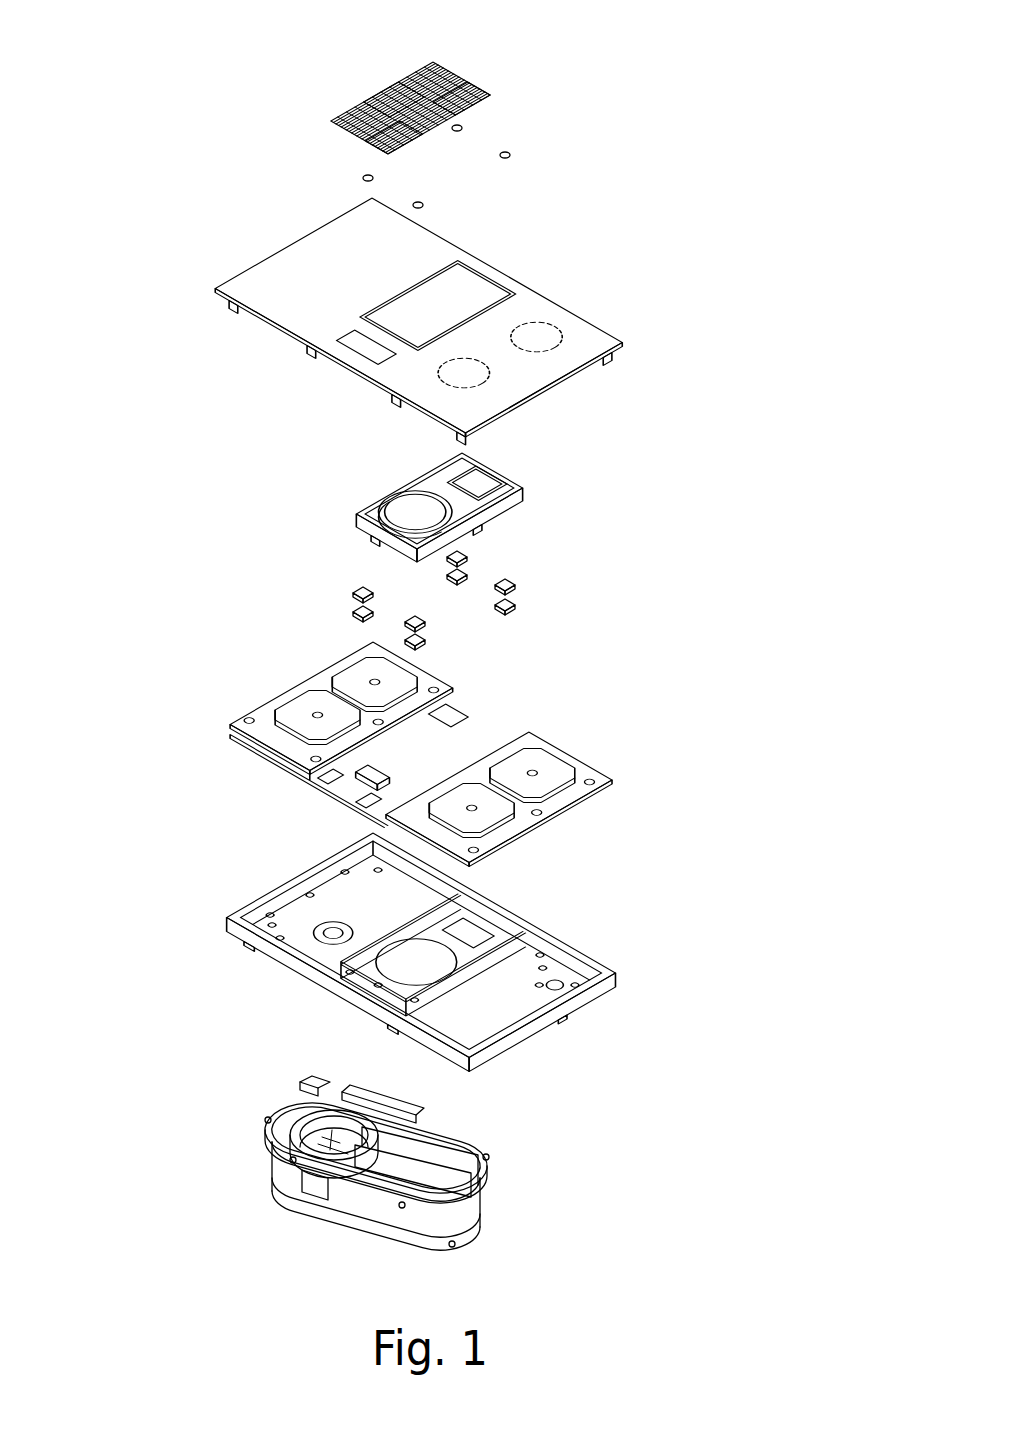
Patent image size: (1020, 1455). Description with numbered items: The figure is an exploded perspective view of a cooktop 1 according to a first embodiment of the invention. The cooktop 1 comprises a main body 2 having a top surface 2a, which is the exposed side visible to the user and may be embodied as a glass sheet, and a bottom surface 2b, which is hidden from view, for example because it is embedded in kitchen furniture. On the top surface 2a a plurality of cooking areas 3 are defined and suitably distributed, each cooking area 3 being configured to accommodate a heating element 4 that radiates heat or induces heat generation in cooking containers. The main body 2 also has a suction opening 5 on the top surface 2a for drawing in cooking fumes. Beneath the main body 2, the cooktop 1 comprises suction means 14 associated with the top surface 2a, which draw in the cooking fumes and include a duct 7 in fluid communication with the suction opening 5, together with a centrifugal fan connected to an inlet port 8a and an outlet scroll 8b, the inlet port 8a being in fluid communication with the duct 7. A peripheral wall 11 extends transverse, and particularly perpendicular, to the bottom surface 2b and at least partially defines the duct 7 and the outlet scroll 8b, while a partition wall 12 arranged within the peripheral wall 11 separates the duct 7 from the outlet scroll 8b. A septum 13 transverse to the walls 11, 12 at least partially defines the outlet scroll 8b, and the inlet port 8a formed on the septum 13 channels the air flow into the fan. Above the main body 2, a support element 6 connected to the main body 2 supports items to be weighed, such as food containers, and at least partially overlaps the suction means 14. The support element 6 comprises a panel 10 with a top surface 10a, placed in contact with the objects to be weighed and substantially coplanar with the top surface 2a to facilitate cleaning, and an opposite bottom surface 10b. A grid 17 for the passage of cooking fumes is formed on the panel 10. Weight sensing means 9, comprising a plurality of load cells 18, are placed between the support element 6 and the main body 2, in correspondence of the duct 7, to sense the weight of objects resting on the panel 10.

The cooktop 1 is at (150, 126).
The main body 2 is at (672, 220).
The top surface 2a is at (278, 277).
The bottom surface 2b is at (262, 950).
The cooking area 3 is at (563, 348).
The heating element 4 is at (354, 668).
The suction opening 5 is at (383, 500).
The support element 6 is at (324, 113).
The duct 7 is at (428, 1150).
The inlet port 8a is at (368, 1162).
The outlet scroll 8b is at (383, 1085).
The weight sensing means 9 is at (537, 553).
The panel 10 is at (413, 68).
The top surface of the panel 10a is at (452, 85).
The bottom surface of the panel 10b is at (432, 131).
The peripheral wall 11 is at (277, 1163).
The partition wall 12 is at (383, 1170).
The septum 13 is at (293, 1125).
The suction means 14 is at (185, 1040).
The grid 17 is at (373, 115).
The load cell 18 is at (512, 610).